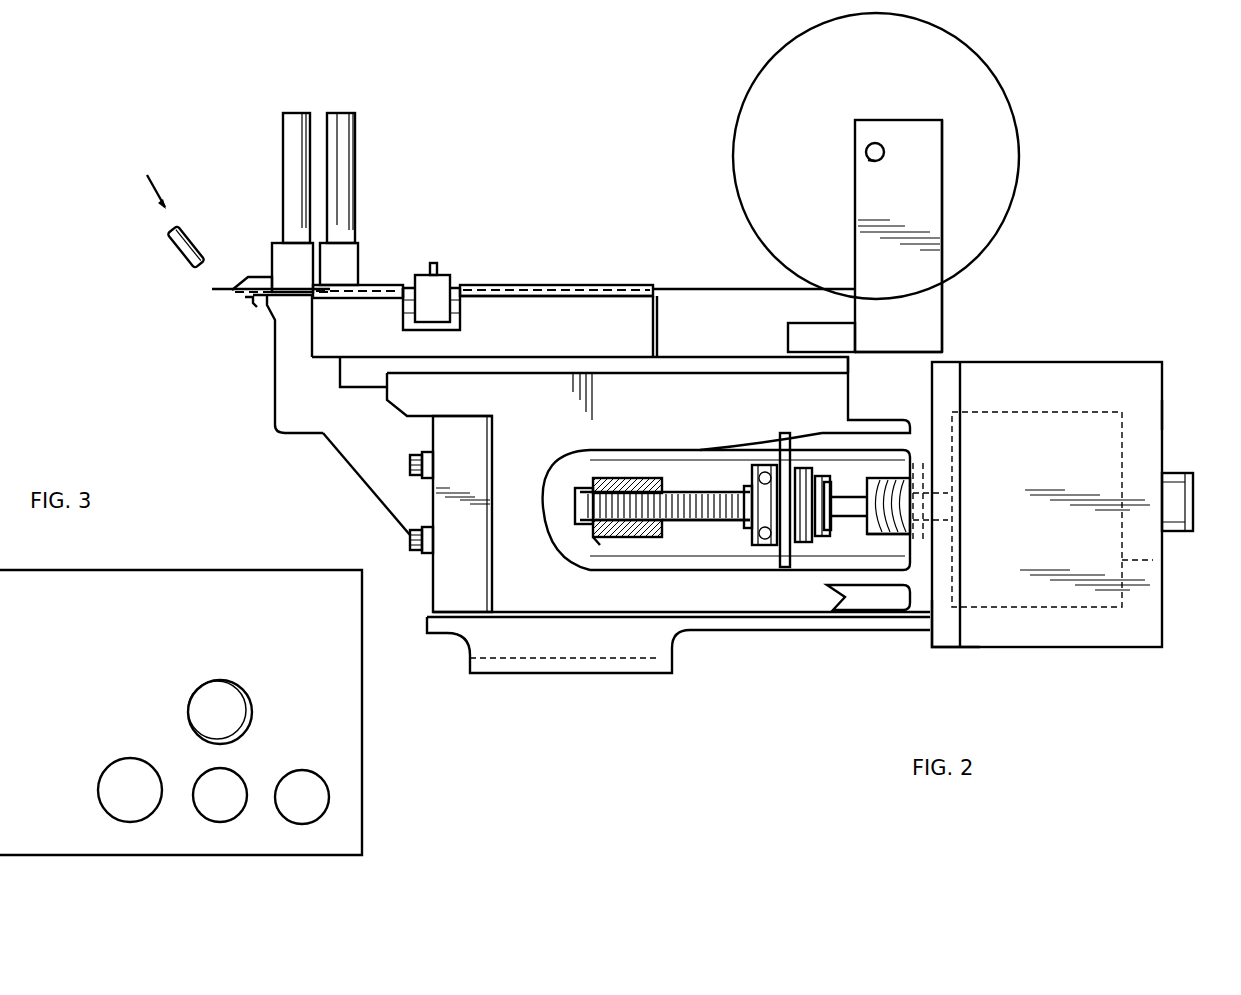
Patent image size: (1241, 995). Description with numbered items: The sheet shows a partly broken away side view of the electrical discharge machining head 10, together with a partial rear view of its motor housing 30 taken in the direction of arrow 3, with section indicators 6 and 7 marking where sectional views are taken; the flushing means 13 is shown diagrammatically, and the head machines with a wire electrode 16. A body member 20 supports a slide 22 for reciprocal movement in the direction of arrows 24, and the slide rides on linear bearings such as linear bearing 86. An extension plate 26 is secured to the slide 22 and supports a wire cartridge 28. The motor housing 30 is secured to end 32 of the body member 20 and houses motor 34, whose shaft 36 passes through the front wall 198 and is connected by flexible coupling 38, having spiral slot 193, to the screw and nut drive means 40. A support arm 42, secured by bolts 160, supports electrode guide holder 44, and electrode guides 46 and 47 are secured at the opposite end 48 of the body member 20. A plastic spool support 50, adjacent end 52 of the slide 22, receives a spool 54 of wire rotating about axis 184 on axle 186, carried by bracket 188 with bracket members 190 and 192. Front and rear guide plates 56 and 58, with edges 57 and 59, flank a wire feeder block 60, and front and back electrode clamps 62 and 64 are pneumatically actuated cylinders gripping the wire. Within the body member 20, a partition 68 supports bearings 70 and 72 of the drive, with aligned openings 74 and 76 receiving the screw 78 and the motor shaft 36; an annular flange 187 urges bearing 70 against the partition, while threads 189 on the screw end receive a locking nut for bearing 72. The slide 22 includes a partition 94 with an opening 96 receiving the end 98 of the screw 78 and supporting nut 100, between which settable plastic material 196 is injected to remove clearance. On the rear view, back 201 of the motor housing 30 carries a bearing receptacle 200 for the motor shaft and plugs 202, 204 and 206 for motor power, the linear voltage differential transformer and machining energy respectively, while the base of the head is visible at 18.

In FIG. 2, the arrow 3 is at (1185, 627).
In FIG. 2, the section line 6 is at (665, 315).
In FIG. 2, the section line 7 is at (743, 328).
In FIG. 2, the electrical discharge machining head 10 is at (778, 735).
In FIG. 2, the flushing means 13 is at (175, 252).
In FIG. 2, the wire electrode 16 is at (220, 292).
In FIG. 2, the base 18 is at (527, 673).
In FIG. 2, the body member 20 is at (878, 630).
In FIG. 2, the slide 22 is at (853, 378).
In FIG. 2, the arrows 24 is at (1012, 310).
In FIG. 2, the extension plate 26 is at (812, 352).
In FIG. 2, the wire cartridge 28 is at (628, 287).
In FIG. 2, the motor housing 30 is at (1058, 362).
In FIG. 3, the motor housing 30 is at (219, 570).
In FIG. 2, the end of body member 32 is at (933, 612).
In FIG. 2, the motor 34 is at (1153, 560).
In FIG. 2, the motor shaft 36 is at (925, 493).
In FIG. 2, the flexible coupling 38 is at (875, 534).
In FIG. 2, the screw and nut drive means 40 is at (700, 522).
In FIG. 2, the support arm 42 is at (357, 470).
In FIG. 2, the electrode guide holder 44 is at (275, 360).
In FIG. 2, the electrode guide 46 is at (247, 277).
In FIG. 2, the electrode guide 47 is at (244, 302).
In FIG. 2, the end of body member 48 is at (490, 572).
In FIG. 2, the wire electrode spool support 50 is at (944, 292).
In FIG. 2, the end of slide 52 is at (853, 392).
In FIG. 2, the spool 54 is at (1010, 94).
In FIG. 2, the front electrode guide plate 56 is at (373, 287).
In FIG. 2, the plate edge 57 is at (403, 288).
In FIG. 2, the rear electrode guide plate 58 is at (498, 285).
In FIG. 2, the guide plate lower edge 59 is at (575, 285).
In FIG. 2, the wire feeder block 60 is at (440, 275).
In FIG. 2, the front electrode clamp 62 is at (290, 152).
In FIG. 2, the back electrode clamp 64 is at (357, 158).
In FIG. 2, the partition 68 is at (784, 567).
In FIG. 2, the bearing 70 is at (758, 468).
In FIG. 2, the bearing 72 is at (797, 478).
In FIG. 2, the opening 74 is at (724, 476).
In FIG. 2, the opening 76 is at (942, 517).
In FIG. 2, the screw 78 is at (678, 492).
In FIG. 2, the linear bearing 86 is at (575, 673).
In FIG. 2, the partition 94 is at (598, 540).
In FIG. 2, the opening 96 is at (587, 490).
In FIG. 2, the end of screw 98 is at (577, 508).
In FIG. 2, the nut 100 is at (620, 478).
In FIG. 2, the bolts 160 is at (413, 528).
In FIG. 2, the axis 184 is at (868, 160).
In FIG. 2, the axle 186 is at (866, 151).
In FIG. 2, the annular flange 187 is at (747, 540).
In FIG. 2, the bracket 188 is at (943, 182).
In FIG. 2, the threads 189 is at (826, 488).
In FIG. 2, the bracket member 190 is at (787, 323).
In FIG. 2, the bracket member 192 is at (942, 134).
In FIG. 2, the spiral slot 193 is at (905, 478).
In FIG. 2, the settable plastic material 196 is at (647, 538).
In FIG. 2, the front wall of motor housing 198 is at (953, 362).
In FIG. 2, the bearing receptacle 200 is at (1190, 474).
In FIG. 3, the bearing receptacle 200 is at (250, 692).
In FIG. 2, the back of housing 201 is at (1162, 415).
In FIG. 3, the motor power plug 202 is at (128, 760).
In FIG. 3, the linear voltage differential transformer connection plug 204 is at (218, 821).
In FIG. 3, the electrical discharge machining energy plug 206 is at (325, 800).